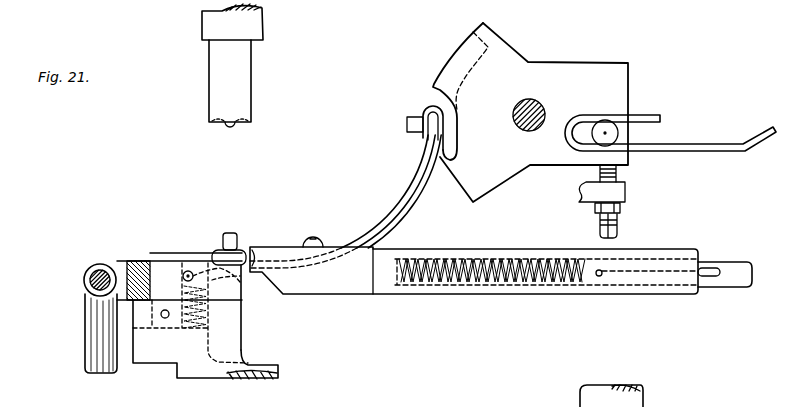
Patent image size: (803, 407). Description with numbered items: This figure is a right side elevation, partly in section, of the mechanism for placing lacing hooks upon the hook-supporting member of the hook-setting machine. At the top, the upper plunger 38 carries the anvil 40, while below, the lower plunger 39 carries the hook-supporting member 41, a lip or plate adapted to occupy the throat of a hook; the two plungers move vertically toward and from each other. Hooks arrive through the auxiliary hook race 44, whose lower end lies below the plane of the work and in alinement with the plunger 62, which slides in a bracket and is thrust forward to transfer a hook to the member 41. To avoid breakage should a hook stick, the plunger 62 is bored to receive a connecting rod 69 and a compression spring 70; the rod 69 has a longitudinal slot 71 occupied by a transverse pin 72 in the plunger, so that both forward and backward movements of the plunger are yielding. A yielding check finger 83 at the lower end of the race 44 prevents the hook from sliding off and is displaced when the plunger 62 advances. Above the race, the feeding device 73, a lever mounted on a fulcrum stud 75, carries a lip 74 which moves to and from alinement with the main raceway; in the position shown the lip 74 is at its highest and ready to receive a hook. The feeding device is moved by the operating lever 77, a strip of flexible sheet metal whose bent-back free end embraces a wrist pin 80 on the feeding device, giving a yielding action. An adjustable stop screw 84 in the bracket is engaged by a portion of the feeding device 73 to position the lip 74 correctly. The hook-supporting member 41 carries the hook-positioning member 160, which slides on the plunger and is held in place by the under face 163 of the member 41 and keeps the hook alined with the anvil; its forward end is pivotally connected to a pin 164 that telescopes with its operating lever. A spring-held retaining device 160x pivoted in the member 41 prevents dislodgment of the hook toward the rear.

The plunger 38 is at (205, 20).
The anvil 40 is at (243, 107).
The feeding device 73 is at (628, 67).
The fulcrum stud 75 is at (525, 131).
The wrist pin 80 is at (604, 133).
The operating lever 77 is at (753, 148).
The adjustable stop screw 84 is at (617, 173).
The lip 74 is at (430, 143).
The auxiliary hook race 44 is at (403, 208).
The plunger 62 is at (385, 283).
The yielding check finger 83 is at (279, 246).
The compression spring 70 is at (532, 282).
The transverse pin 72 is at (599, 276).
The connecting rod 69 is at (735, 279).
The longitudinal slot 71 is at (708, 270).
The hook-supporting member 41 is at (188, 253).
The hook-positioning member 160 is at (138, 260).
The under face 163 is at (169, 251).
The plunger 39 is at (205, 367).
The pin 164 is at (85, 328).
The retaining device 160x is at (222, 277).